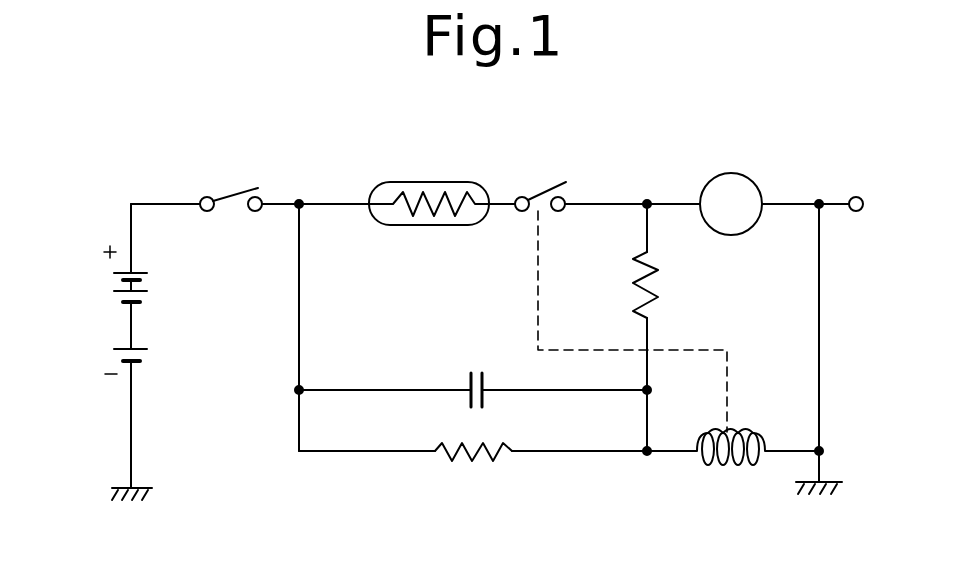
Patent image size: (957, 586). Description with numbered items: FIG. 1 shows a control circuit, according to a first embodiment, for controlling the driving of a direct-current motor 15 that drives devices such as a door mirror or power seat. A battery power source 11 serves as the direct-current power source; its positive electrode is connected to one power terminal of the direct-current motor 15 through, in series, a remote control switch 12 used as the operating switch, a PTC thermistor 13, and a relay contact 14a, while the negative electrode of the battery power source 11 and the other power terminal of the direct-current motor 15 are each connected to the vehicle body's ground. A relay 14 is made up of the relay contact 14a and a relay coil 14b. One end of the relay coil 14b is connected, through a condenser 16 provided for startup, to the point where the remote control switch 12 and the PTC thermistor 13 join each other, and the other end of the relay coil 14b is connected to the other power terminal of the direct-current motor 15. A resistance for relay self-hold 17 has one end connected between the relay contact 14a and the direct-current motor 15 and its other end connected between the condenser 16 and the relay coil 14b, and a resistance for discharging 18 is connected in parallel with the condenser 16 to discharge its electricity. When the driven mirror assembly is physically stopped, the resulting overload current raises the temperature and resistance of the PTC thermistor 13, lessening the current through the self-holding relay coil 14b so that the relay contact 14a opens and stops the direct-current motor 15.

The battery power source 11 is at (114, 320).
The remote control switch 12 is at (230, 192).
The PTC thermistor 13 is at (427, 182).
The relay 14 is at (644, 335).
The relay contact 14a is at (545, 190).
The relay coil 14b is at (733, 467).
The direct-current motor 15 is at (727, 173).
The condenser 16 is at (476, 372).
The resistance for relay self-hold 17 is at (656, 262).
The resistance for discharging 18 is at (470, 466).